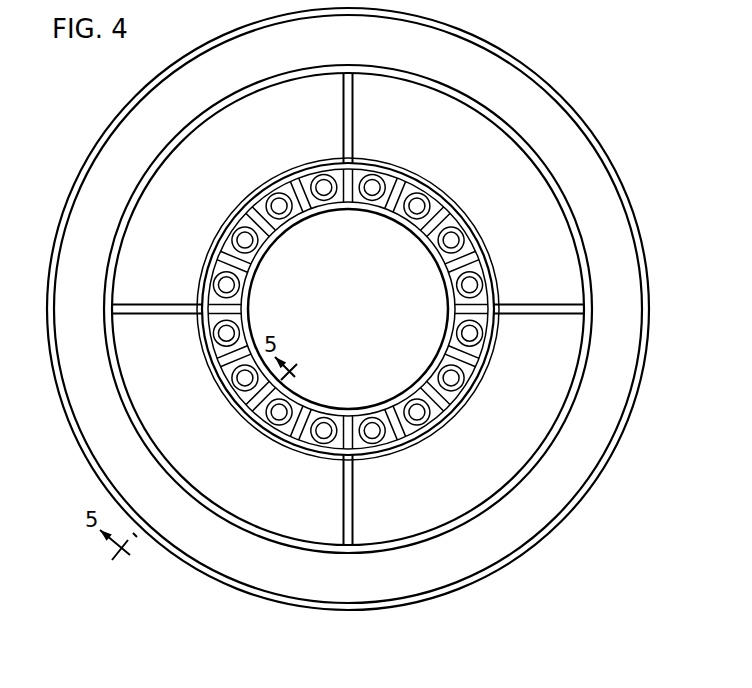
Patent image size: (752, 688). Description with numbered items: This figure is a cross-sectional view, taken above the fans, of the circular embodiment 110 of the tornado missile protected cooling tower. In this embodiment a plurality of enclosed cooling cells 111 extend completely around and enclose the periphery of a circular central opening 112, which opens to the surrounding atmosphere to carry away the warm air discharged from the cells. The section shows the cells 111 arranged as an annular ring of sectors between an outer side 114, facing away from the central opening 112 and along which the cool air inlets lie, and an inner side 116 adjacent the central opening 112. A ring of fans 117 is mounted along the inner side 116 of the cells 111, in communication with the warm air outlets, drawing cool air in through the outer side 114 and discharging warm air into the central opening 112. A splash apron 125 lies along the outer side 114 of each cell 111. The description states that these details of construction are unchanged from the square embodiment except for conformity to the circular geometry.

The circular embodiment 110 is at (602, 71).
The cooling cells 111 is at (118, 204).
The central opening 112 is at (338, 309).
The radial spoke 114 is at (193, 118).
The inner bearing race 116 is at (288, 224).
The roller bearing 117 is at (322, 172).
The outer rim 125 is at (234, 62).